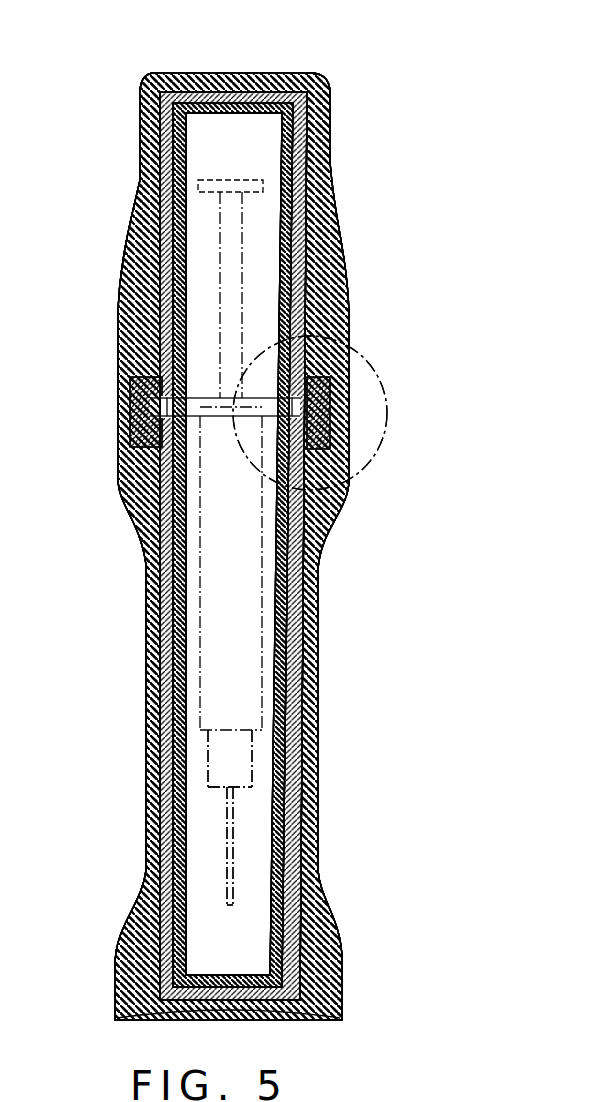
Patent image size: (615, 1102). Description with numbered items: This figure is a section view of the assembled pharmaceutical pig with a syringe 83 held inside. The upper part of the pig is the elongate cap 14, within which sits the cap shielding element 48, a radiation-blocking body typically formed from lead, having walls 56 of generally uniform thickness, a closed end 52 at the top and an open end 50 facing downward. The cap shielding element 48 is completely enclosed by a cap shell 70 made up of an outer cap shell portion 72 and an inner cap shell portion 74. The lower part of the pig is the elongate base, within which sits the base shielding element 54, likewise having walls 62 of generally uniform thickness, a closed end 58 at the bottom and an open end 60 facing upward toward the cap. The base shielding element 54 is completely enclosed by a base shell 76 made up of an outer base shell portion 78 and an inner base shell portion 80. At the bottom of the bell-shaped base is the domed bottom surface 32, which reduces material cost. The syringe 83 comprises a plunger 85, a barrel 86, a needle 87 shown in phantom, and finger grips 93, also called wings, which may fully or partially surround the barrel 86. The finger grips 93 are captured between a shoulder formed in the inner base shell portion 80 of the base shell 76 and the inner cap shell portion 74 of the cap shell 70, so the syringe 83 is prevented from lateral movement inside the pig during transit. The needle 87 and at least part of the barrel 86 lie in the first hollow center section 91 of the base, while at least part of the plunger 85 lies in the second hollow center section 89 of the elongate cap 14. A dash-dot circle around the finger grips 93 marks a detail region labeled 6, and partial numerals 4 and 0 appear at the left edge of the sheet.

The cap shielding element 48 is at (293, 100).
The plunger 85 is at (243, 210).
The elongate cap 14 is at (370, 178).
The walls of the cap shielding element 56 is at (300, 235).
The cap shell 70 is at (348, 275).
The outer cap shell portion 72 is at (350, 315).
The finger grips 93 is at (347, 350).
The detail view reference 6 is at (382, 378).
The inner cap shell portion 74 is at (282, 308).
The open end of the cap shielding element 50 is at (190, 402).
The open end of the base shielding element 60 is at (172, 425).
The walls of the base shielding element 62 is at (163, 620).
The barrel 86 is at (243, 668).
The syringe 83 is at (253, 766).
The needle 87 is at (233, 847).
The outer base shell portion 78 is at (312, 870).
The base shielding element 54 is at (293, 928).
The inner base shell portion 80 is at (273, 910).
The closed end of the base shielding element 58 is at (193, 982).
The first hollow center section 91 is at (253, 969).
The second hollow center section 89 is at (228, 152).
The closed end of the cap shielding element 52 is at (257, 113).
The base shell 76 is at (343, 999).
The bottom surface 32 is at (225, 1020).
The partial numeral 4 is at (11, 177).
The partial numeral 0 is at (6, 274).